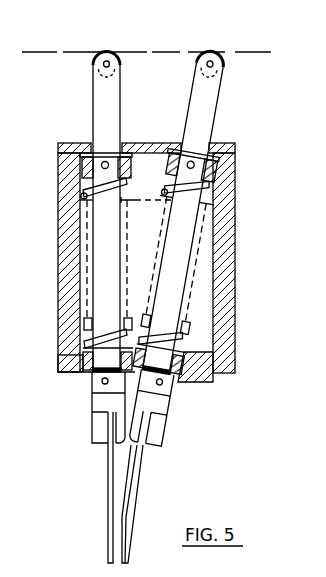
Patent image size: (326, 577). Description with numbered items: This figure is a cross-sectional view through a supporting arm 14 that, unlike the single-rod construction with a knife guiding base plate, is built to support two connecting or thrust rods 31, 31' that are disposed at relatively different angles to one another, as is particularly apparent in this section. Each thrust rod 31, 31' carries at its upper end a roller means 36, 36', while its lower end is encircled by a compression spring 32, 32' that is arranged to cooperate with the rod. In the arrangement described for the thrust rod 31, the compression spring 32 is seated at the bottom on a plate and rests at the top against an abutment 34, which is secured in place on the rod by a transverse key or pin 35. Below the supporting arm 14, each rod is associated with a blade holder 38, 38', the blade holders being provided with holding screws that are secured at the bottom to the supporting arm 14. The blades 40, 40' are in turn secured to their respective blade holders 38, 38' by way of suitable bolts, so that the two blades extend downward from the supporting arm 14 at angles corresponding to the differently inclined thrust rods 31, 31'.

The supporting arm 14 is at (226, 250).
The thrust rod 31 is at (83, 189).
The thrust rod 31' is at (184, 190).
The roller means 36 is at (105, 42).
The roller means 36' is at (219, 42).
The compression spring 32 is at (86, 142).
The compression spring 32' is at (189, 144).
The abutment 34 is at (126, 145).
The transverse key or pin 35 is at (200, 147).
The blade holder 38 is at (82, 407).
The blade holder 38' is at (180, 407).
The blade 40 is at (78, 487).
The blade 40' is at (176, 504).